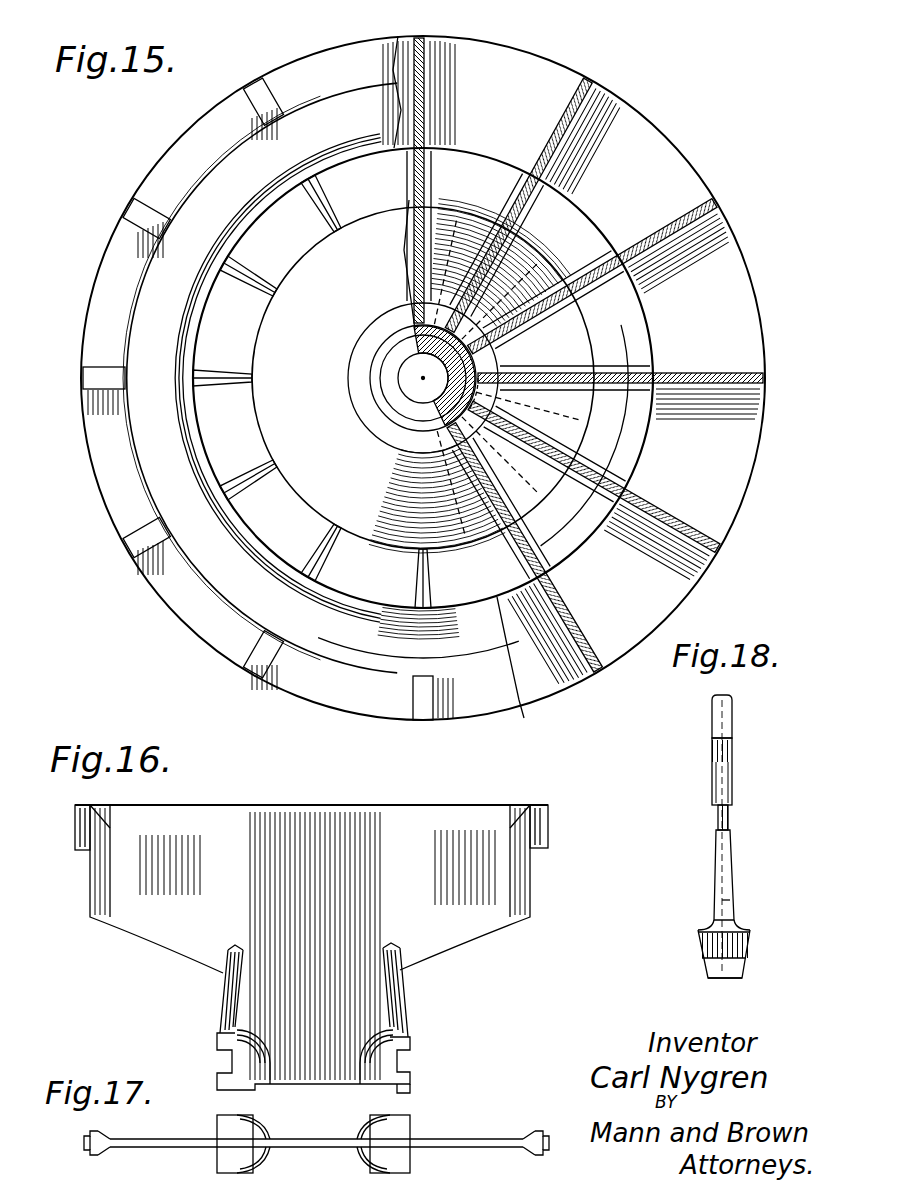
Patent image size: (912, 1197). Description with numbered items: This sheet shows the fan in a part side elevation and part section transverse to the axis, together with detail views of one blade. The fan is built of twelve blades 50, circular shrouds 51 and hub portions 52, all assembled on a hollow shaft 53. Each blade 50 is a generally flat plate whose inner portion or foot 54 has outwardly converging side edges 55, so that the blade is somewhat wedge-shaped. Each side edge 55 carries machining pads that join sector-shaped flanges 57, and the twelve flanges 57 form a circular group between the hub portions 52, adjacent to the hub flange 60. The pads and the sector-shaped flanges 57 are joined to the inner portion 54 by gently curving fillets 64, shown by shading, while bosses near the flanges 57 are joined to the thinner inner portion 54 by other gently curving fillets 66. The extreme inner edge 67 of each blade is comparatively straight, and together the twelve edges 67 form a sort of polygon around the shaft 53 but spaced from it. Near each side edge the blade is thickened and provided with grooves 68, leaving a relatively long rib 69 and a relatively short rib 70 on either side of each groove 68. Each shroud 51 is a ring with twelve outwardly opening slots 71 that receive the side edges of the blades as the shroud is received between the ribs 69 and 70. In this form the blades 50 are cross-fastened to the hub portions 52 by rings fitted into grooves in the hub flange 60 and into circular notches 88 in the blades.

In FIG. 15, the blades 50 is at (426, 46).
In FIG. 16, the blades 50 is at (368, 790).
In FIG. 17, the blades 50 is at (445, 1139).
In FIG. 18, the blades 50 is at (744, 830).
In FIG. 15, the circular shroud 51 is at (745, 412).
In FIG. 15, the hub portion 52 is at (321, 478).
In FIG. 15, the hollow shaft 53 is at (390, 400).
In FIG. 16, the inner portion or foot 54 is at (318, 1086).
In FIG. 18, the inner portion or foot 54 is at (730, 905).
In FIG. 15, the side edges 55 is at (522, 227).
In FIG. 16, the side edges 55 is at (406, 996).
In FIG. 18, the side edges 55 is at (735, 868).
In FIG. 15, the sector-shaped flanges 57 is at (528, 407).
In FIG. 16, the sector-shaped flanges 57 is at (232, 1043).
In FIG. 17, the sector-shaped flanges 57 is at (250, 1122).
In FIG. 18, the sector-shaped flanges 57 is at (746, 936).
In FIG. 15, the hub flange 60 is at (588, 328).
In FIG. 15, the fillets 64 is at (548, 128).
In FIG. 16, the fillets 64 is at (112, 822).
In FIG. 17, the fillets 64 is at (108, 1137).
In FIG. 16, the fillets 66 is at (362, 1066).
In FIG. 17, the fillets 66 is at (258, 1132).
In FIG. 16, the extreme inner edges 67 is at (410, 1092).
In FIG. 18, the extreme inner edges 67 is at (727, 980).
In FIG. 16, the grooves 68 is at (82, 826).
In FIG. 17, the grooves 68 is at (88, 1133).
In FIG. 16, the long ribs 69 is at (92, 876).
In FIG. 18, the long ribs 69 is at (734, 770).
In FIG. 16, the short ribs 70 is at (80, 845).
In FIG. 17, the short ribs 70 is at (84, 1145).
In FIG. 18, the short ribs 70 is at (734, 718).
In FIG. 15, the slots 71 is at (425, 682).
In FIG. 16, the circular notches 88 is at (222, 1061).
In FIG. 18, the circular notches 88 is at (710, 952).